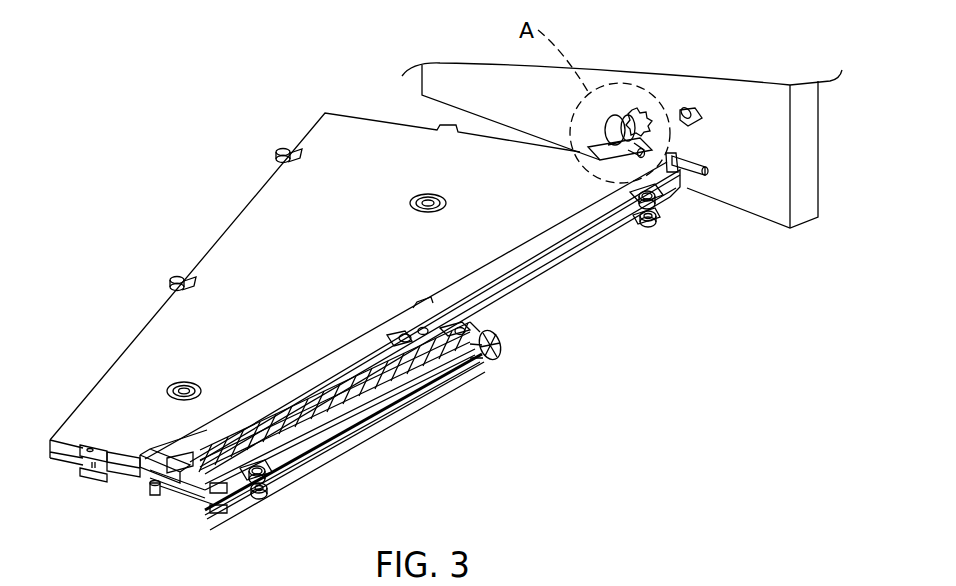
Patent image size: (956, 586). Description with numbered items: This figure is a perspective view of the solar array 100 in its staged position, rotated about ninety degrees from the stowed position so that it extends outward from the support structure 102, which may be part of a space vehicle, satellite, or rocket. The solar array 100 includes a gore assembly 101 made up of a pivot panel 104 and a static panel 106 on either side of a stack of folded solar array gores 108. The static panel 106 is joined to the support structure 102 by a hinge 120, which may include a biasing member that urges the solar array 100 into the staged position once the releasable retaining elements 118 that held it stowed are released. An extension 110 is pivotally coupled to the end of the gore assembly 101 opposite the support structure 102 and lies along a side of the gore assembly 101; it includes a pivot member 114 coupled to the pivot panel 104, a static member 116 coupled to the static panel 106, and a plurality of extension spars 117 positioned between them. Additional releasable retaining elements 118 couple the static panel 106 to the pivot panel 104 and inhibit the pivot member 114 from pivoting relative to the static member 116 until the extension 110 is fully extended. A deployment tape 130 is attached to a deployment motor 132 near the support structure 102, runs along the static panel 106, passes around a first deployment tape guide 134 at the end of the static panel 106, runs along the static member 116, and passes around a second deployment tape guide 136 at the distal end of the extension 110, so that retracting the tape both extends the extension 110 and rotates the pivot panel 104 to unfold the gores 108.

The solar array 100 is at (172, 162).
The gore assembly 101 is at (112, 346).
The support structure 102 is at (779, 113).
The pivot panel 104 is at (627, 230).
The static panel 106 is at (240, 235).
The solar array gores 108 is at (590, 245).
The extension 110 is at (418, 412).
The pivot member 114 is at (300, 470).
The static member 116 is at (305, 410).
The extension spars 117 is at (385, 410).
The releasable retaining elements 118 is at (275, 158).
The hinge 120 is at (588, 142).
The deployment tape 130 is at (508, 251).
The deployment motor 132 is at (706, 170).
The first deployment tape guide 134 is at (145, 510).
The second deployment tape guide 136 is at (500, 357).